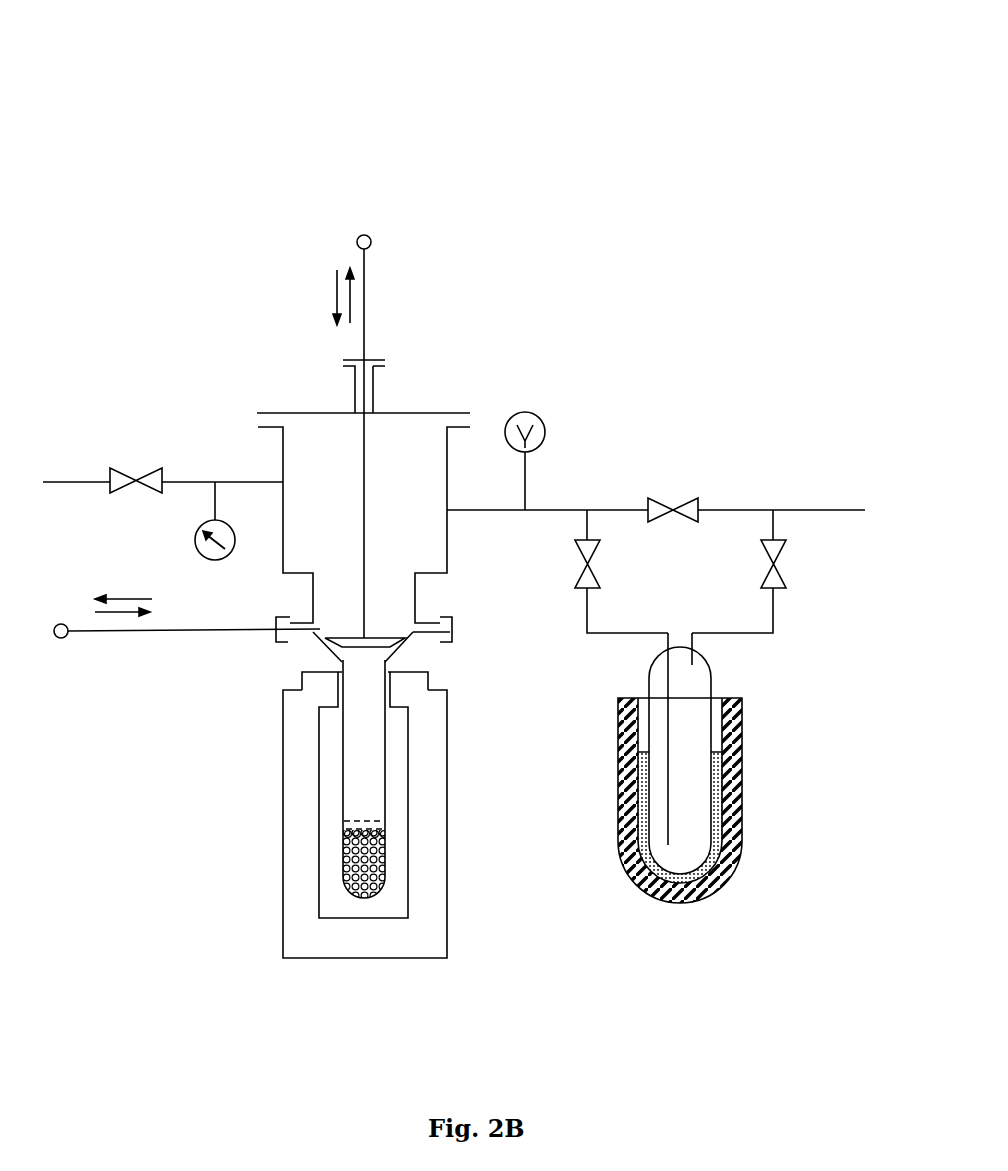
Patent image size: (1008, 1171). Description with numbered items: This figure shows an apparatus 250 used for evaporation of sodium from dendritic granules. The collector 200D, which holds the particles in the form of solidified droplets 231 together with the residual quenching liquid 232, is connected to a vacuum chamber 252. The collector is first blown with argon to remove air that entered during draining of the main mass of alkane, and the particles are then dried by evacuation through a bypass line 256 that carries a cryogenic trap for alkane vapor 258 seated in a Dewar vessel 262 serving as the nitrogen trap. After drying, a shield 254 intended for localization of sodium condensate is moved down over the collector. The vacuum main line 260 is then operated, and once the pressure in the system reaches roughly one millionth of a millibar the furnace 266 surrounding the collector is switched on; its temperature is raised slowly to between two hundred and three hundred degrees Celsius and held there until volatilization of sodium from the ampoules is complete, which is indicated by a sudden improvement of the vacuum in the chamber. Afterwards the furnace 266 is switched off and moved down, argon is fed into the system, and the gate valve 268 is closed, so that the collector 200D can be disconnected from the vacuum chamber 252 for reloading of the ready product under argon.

The apparatus 250 is at (434, 156).
The vacuum chamber 252 is at (283, 462).
The shield 254 is at (380, 637).
The bypass line 256 is at (587, 618).
The cryogenic trap for alkane vapor 258 is at (648, 683).
The vacuum main line 260 is at (730, 510).
The Dewar vessel 262 is at (717, 887).
The furnace 266 is at (447, 857).
The gate valve 268 is at (253, 630).
The collector 200D is at (360, 771).
The solidified droplets 231 is at (370, 832).
The quenching liquid 232 is at (343, 822).